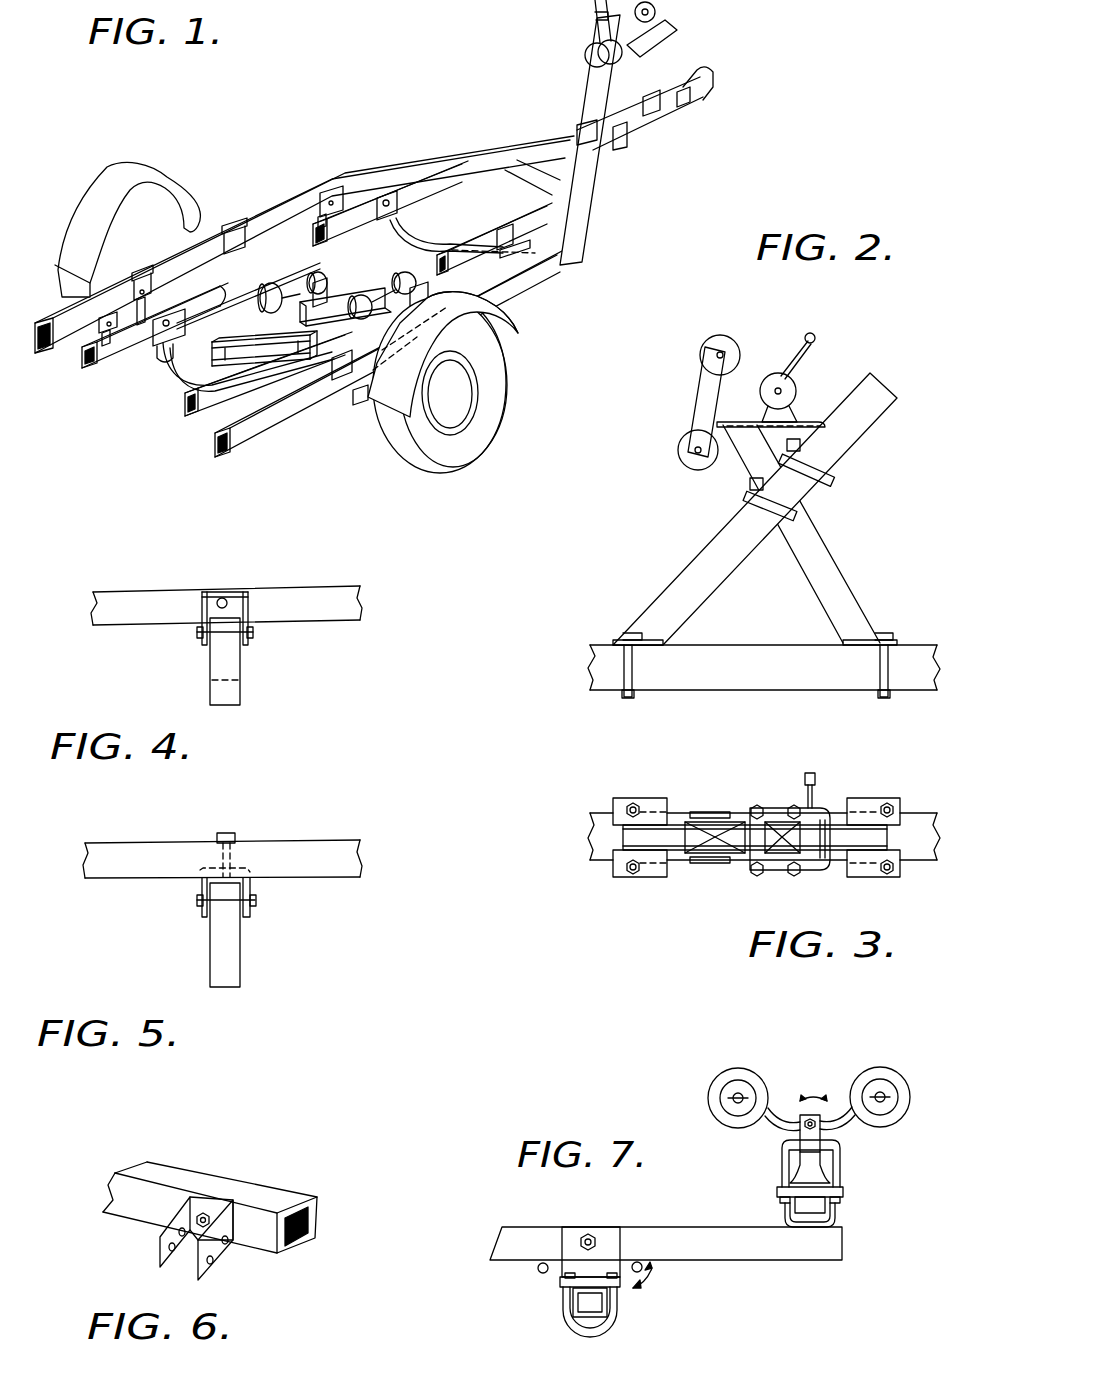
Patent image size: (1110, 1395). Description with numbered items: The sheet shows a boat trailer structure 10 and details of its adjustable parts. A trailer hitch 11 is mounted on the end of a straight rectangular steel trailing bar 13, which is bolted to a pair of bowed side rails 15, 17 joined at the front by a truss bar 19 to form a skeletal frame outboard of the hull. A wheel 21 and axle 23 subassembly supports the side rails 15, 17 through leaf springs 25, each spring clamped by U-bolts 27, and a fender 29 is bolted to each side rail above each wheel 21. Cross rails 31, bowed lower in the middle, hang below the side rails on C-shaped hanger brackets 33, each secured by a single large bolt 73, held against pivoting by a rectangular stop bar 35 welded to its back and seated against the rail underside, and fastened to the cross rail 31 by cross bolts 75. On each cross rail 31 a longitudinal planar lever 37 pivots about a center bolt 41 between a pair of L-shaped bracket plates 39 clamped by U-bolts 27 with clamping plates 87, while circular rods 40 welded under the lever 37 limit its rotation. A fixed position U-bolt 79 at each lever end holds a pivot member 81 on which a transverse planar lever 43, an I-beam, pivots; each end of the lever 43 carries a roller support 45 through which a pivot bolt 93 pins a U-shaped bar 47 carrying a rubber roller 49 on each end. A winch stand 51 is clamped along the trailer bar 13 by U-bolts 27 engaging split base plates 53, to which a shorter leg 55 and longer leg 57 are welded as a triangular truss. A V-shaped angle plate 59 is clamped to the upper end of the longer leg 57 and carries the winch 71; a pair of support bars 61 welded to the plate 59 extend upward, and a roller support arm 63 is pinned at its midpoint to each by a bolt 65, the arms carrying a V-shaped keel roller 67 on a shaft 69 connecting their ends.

In FIG. 1, the trailer structure 10 is at (358, 152).
In FIG. 1, the trailer hitch 11 is at (713, 73).
In FIG. 1, the trailing bar 13 is at (658, 128).
In FIG. 2, the trailing bar 13 is at (777, 676).
In FIG. 3, the trailing bar 13 is at (933, 847).
In FIG. 1, the side rail 15 is at (530, 284).
In FIG. 1, the side rail 17 is at (273, 204).
In FIG. 4, the side rail 17 is at (307, 596).
In FIG. 5, the side rail 17 is at (172, 873).
In FIG. 6, the side rail 17 is at (140, 1214).
In FIG. 1, the truss bar 19 is at (532, 162).
In FIG. 1, the wheel 21 is at (493, 395).
In FIG. 1, the axle 23 is at (237, 302).
In FIG. 1, the leaf spring 25 is at (360, 397).
In FIG. 1, the U-bolt 27 is at (238, 226).
In FIG. 2, the U-bolt 27 is at (821, 461).
In FIG. 3, the U-bolt 27 is at (635, 803).
In FIG. 7, the U-bolt 27 is at (616, 1320).
In FIG. 1, the fender 29 is at (110, 223).
In FIG. 1, the cross rail 31 is at (408, 240).
In FIG. 7, the cross rail 31 is at (587, 1307).
In FIG. 1, the hanger bracket 33 is at (322, 195).
In FIG. 4, the hanger bracket 33 is at (235, 592).
In FIG. 6, the hanger bracket 33 is at (235, 1221).
In FIG. 1, the stop bar 35 is at (97, 340).
In FIG. 4, the stop bar 35 is at (225, 661).
In FIG. 5, the stop bar 35 is at (200, 868).
In FIG. 6, the stop bar 35 is at (237, 1248).
In FIG. 1, the longitudinal planar lever 37 is at (517, 212).
In FIG. 7, the longitudinal planar lever 37 is at (823, 1238).
In FIG. 1, the bracket plate 39 is at (385, 197).
In FIG. 7, the bracket plate 39 is at (607, 1237).
In FIG. 7, the circular rod 40 is at (641, 1257).
In FIG. 1, the center bolt 41 is at (171, 323).
In FIG. 7, the center bolt 41 is at (587, 1238).
In FIG. 1, the transverse planar lever 43 is at (238, 337).
In FIG. 7, the transverse planar lever 43 is at (790, 1167).
In FIG. 1, the roller support 45 is at (420, 297).
In FIG. 7, the roller support 45 is at (817, 1127).
In FIG. 1, the U-shaped bar 47 is at (328, 283).
In FIG. 1, the roller 49 is at (308, 280).
In FIG. 7, the roller 49 is at (724, 1074).
In FIG. 1, the winch stand 51 is at (663, 53).
In FIG. 2, the base plate 53 is at (650, 648).
In FIG. 3, the base plate 53 is at (657, 800).
In FIG. 2, the shorter leg 55 is at (823, 597).
In FIG. 2, the longer leg 57 is at (733, 571).
In FIG. 2, the V-shaped angle plate 59 is at (823, 420).
In FIG. 2, the support bar 61 is at (733, 410).
In FIG. 2, the roller support arm 63 is at (707, 382).
In FIG. 3, the roller support arm 63 is at (723, 813).
In FIG. 2, the bolt 65 is at (700, 411).
In FIG. 3, the keel roller 67 is at (733, 818).
In FIG. 2, the shaft 69 is at (718, 355).
In FIG. 2, the winch 71 is at (783, 368).
In FIG. 3, the winch 71 is at (804, 798).
In FIG. 4, the large bolt 73 is at (221, 598).
In FIG. 5, the large bolt 73 is at (234, 834).
In FIG. 6, the large bolt 73 is at (208, 1217).
In FIG. 4, the cross bolt 75 is at (254, 635).
In FIG. 5, the cross bolt 75 is at (255, 898).
In FIG. 7, the fixed position U-bolt 79 is at (837, 1213).
In FIG. 7, the pivot member 81 is at (780, 1202).
In FIG. 7, the clamping plate 87 is at (843, 1192).
In FIG. 7, the pivot bolt 93 is at (794, 1099).